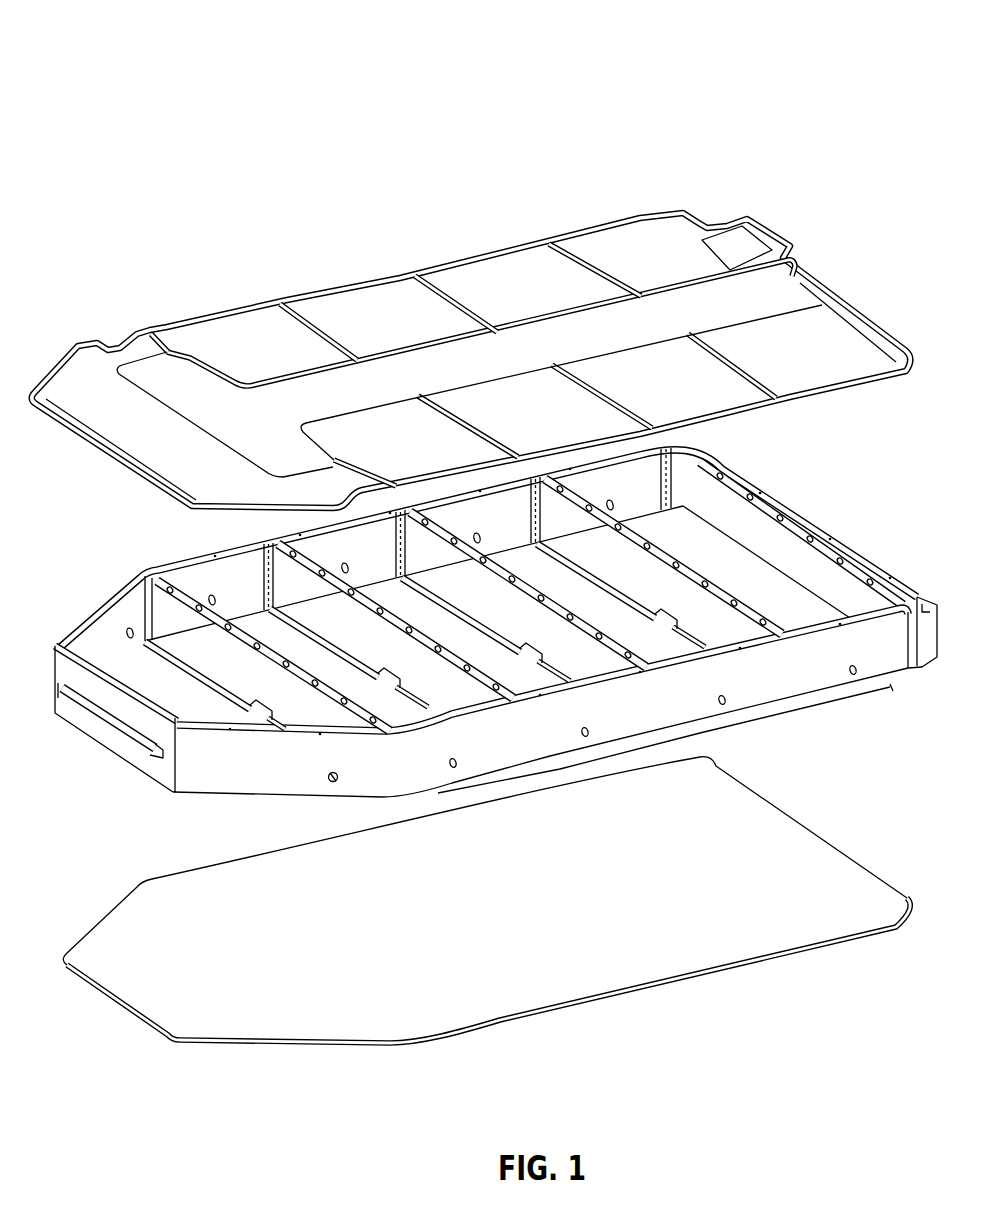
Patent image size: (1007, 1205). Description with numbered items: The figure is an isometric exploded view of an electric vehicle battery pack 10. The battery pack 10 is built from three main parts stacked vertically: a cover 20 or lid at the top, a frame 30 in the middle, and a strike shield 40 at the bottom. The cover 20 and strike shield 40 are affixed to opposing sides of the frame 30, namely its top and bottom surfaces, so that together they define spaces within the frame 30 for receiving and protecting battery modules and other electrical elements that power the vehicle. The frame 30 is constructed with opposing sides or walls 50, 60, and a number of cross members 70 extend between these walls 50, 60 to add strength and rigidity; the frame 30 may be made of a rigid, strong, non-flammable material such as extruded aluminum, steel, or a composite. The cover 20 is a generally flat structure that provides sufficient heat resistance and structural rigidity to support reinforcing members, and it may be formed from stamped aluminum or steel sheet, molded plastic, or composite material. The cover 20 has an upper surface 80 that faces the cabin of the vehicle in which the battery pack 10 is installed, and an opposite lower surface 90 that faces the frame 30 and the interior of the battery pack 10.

The electric vehicle battery pack 10 is at (874, 82).
The cover 20 is at (471, 360).
The frame 30 is at (75, 654).
The strike shield 40 is at (163, 890).
The wall 50 is at (489, 622).
The wall 60 is at (749, 693).
The cross member 70 is at (211, 681).
The upper surface 80 is at (513, 306).
The lower surface 90 is at (812, 402).